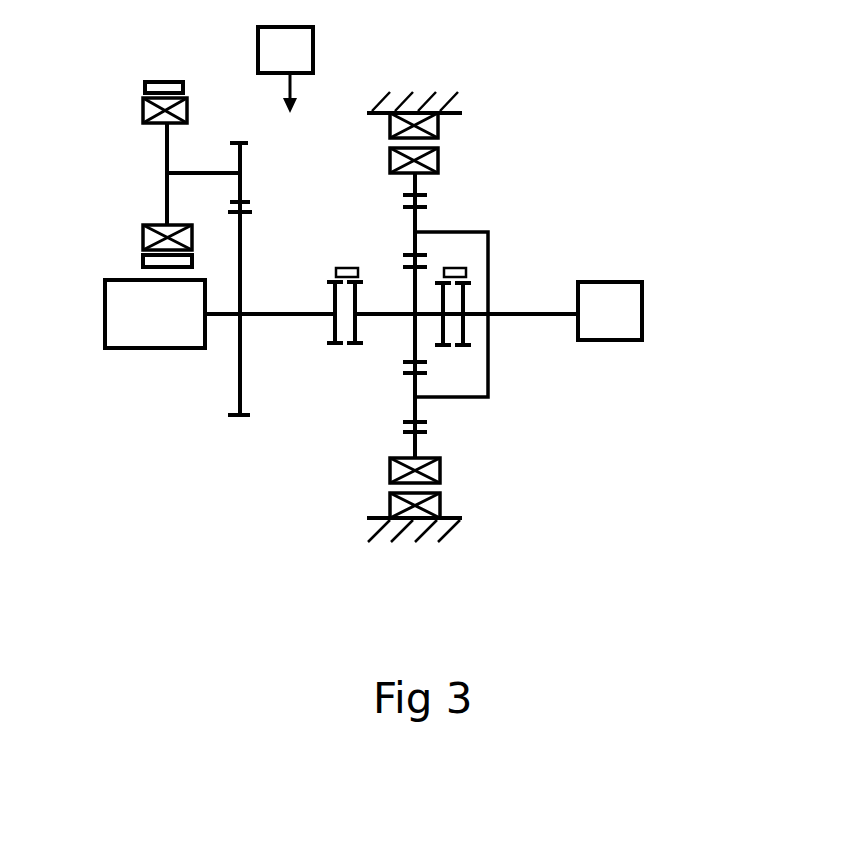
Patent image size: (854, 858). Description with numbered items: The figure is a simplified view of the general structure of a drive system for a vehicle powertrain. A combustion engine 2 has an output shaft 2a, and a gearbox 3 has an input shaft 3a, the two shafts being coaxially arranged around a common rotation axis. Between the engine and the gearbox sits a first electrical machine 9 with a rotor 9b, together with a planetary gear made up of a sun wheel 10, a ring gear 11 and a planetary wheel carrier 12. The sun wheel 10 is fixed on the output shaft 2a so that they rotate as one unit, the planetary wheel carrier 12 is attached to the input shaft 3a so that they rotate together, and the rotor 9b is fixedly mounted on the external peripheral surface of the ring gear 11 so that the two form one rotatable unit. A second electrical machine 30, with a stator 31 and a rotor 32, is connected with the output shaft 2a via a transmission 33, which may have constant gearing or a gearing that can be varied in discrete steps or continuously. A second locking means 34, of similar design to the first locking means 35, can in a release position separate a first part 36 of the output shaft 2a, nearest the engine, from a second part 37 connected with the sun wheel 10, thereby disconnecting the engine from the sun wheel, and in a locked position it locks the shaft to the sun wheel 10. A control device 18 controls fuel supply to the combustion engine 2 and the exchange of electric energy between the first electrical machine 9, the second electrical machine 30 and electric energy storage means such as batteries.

The combustion engine 2 is at (135, 350).
The output shaft 2a is at (268, 315).
The gearbox 3 is at (642, 313).
The input shaft 3a is at (522, 315).
The first electrical machine 9 is at (490, 111).
The rotor 9b is at (390, 158).
The sun wheel 10 is at (410, 286).
The ring gear 11 is at (440, 178).
The planetary wheel carrier 12 is at (493, 290).
The control device 18 is at (315, 45).
The second electrical machine 30 is at (122, 94).
The stator 31 is at (168, 85).
The rotor 32 is at (163, 143).
The transmission 33 is at (257, 210).
The second locking means 34 is at (347, 257).
The first locking means 35 is at (472, 272).
The first part 36 is at (300, 313).
The second part 37 is at (388, 317).